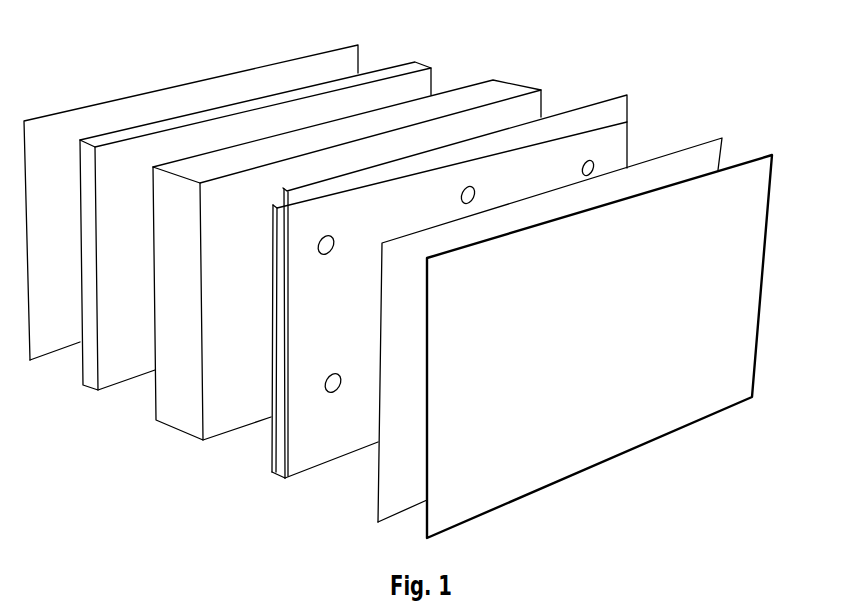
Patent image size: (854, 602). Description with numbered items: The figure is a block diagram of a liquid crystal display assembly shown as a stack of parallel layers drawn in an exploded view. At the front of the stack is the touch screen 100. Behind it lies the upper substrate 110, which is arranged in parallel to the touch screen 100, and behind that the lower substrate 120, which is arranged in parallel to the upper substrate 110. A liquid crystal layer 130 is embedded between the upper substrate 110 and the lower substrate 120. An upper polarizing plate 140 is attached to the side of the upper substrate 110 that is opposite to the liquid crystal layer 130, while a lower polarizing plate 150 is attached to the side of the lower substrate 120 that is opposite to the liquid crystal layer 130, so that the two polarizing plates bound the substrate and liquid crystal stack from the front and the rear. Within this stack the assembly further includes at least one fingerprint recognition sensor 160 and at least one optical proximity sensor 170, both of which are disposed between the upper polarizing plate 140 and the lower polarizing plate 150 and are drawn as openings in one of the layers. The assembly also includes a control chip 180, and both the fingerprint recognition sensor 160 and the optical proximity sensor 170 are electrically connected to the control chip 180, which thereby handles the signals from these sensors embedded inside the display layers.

The touch screen 100 is at (741, 188).
The upper substrate 110 is at (616, 140).
The lower substrate 120 is at (419, 60).
The liquid crystal layer 130 is at (534, 84).
The upper polarizing plate 140 is at (720, 144).
The lower polarizing plate 150 is at (340, 54).
The fingerprint recognition sensor 160 is at (313, 257).
The optical proximity sensor 170 is at (322, 400).
The control chip 180 is at (610, 104).